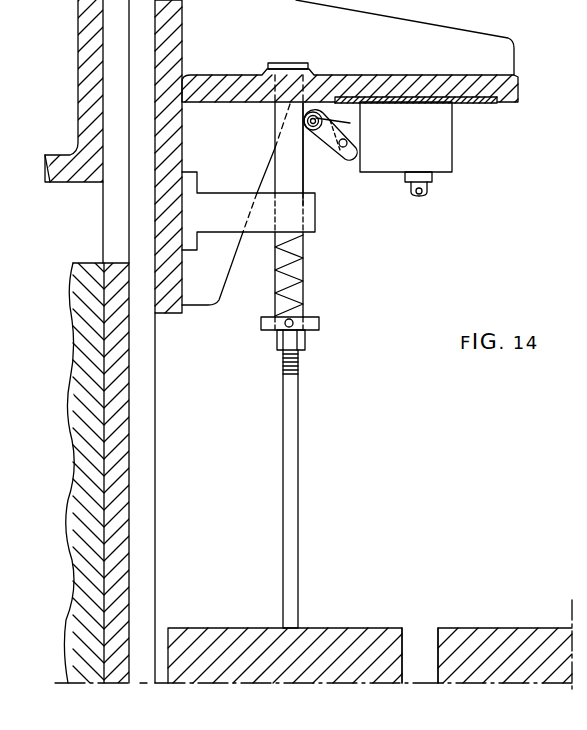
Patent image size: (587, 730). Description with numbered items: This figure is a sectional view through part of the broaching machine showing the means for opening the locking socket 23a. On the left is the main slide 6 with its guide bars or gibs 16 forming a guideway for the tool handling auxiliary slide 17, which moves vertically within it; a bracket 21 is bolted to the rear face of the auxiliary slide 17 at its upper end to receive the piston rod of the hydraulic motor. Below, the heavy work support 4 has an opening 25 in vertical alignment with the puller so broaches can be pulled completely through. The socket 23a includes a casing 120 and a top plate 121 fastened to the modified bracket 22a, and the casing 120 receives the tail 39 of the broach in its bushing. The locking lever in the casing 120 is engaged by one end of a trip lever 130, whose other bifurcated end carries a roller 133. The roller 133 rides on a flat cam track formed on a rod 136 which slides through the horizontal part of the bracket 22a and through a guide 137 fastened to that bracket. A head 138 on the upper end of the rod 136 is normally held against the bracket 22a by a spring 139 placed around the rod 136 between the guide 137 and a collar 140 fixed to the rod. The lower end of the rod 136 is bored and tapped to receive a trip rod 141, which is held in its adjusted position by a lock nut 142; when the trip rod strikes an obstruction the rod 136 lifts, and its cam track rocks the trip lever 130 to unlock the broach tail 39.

The work support 4 is at (493, 636).
The main slide 6 is at (85, 496).
The guide bars or gibs 16 is at (118, 673).
The auxiliary slide 17 is at (145, 462).
The bracket 21 is at (88, 63).
The bracket 22a is at (388, 44).
The socket 23a is at (463, 126).
The opening 25 is at (418, 680).
The broach tail 39 is at (428, 187).
The casing 120 is at (430, 152).
The top plate 121 is at (500, 100).
The trip lever 130 is at (312, 128).
The roller 133 is at (335, 111).
The rod 136 is at (278, 118).
The guide 137 is at (228, 204).
The head 138 is at (284, 62).
The spring 139 is at (306, 284).
The collar 140 is at (319, 323).
The trip rod 141 is at (298, 410).
The lock nut 142 is at (277, 345).